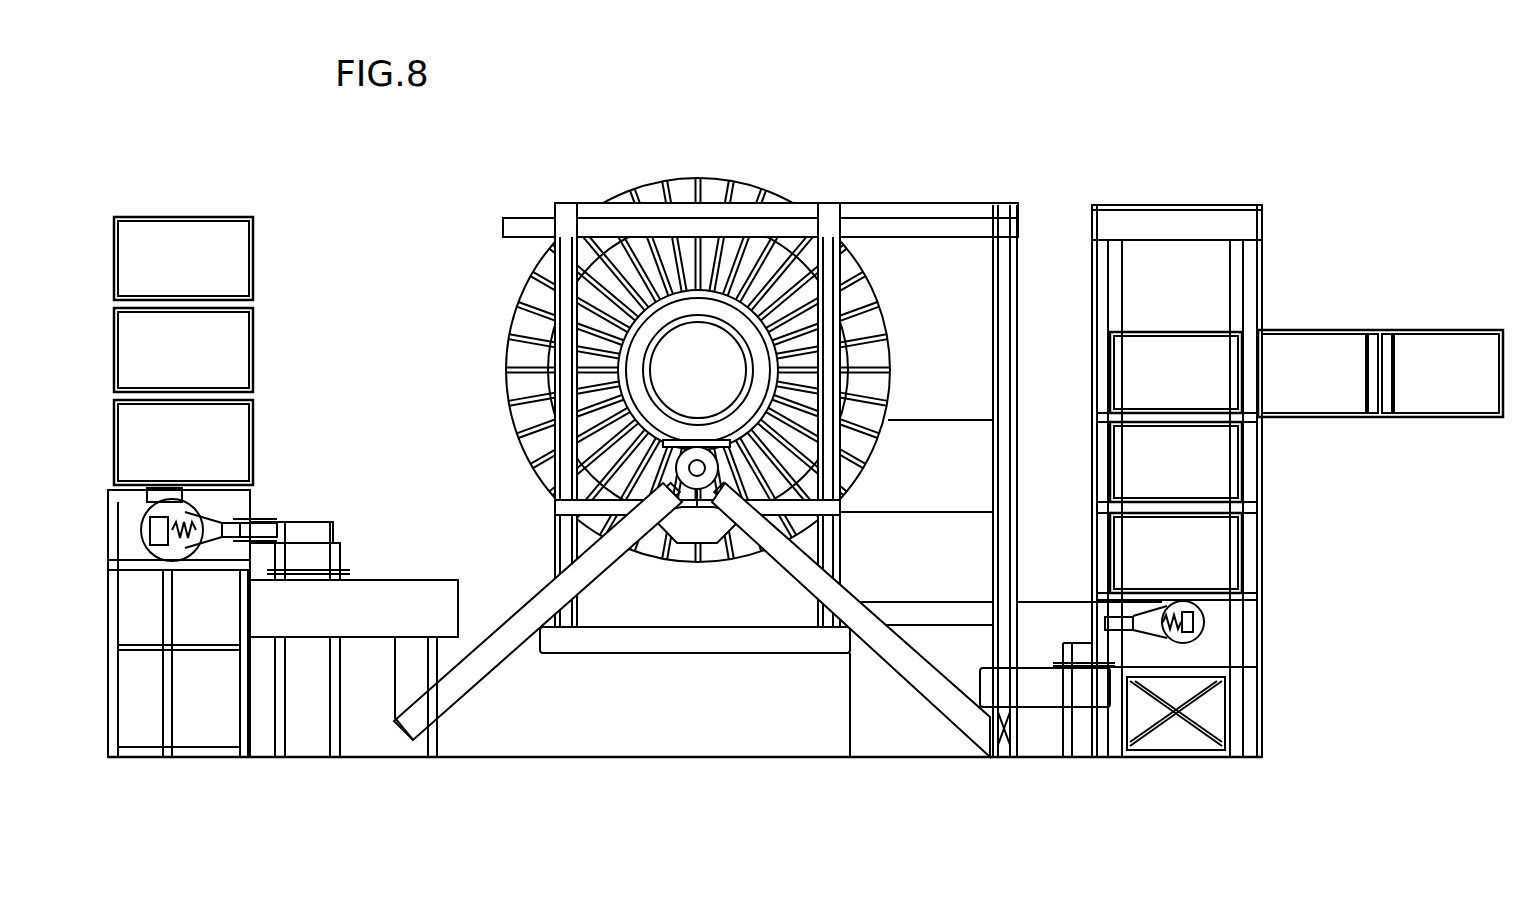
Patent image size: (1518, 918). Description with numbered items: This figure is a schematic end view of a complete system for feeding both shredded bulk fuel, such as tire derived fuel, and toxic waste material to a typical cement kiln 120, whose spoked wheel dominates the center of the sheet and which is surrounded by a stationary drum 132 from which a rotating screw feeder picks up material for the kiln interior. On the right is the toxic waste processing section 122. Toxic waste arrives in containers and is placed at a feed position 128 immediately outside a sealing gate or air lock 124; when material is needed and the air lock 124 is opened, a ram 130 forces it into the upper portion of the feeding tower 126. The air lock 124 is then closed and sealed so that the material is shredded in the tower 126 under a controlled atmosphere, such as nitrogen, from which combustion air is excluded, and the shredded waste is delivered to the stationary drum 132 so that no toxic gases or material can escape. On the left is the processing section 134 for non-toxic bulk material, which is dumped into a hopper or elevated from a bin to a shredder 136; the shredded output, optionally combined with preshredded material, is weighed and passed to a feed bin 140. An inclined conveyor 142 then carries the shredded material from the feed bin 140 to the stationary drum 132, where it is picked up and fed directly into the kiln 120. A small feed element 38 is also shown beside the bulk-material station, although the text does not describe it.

The feed unit 38 is at (345, 556).
The cement kiln 120 is at (734, 344).
The toxic waste processing section 122 is at (1234, 458).
The air lock 124 is at (1278, 318).
The feeding tower 126 is at (1150, 207).
The feed position 128 is at (1287, 387).
The ram 130 is at (1423, 387).
The stationary drum 132 is at (888, 396).
The processing section 134 is at (246, 181).
The shredder 136 is at (253, 498).
The feed bin 140 is at (460, 600).
The conveyor 142 is at (484, 690).